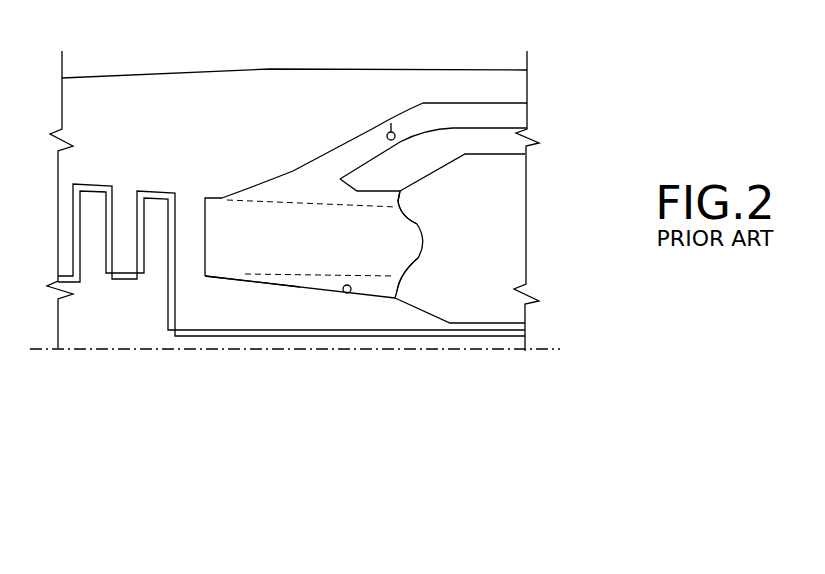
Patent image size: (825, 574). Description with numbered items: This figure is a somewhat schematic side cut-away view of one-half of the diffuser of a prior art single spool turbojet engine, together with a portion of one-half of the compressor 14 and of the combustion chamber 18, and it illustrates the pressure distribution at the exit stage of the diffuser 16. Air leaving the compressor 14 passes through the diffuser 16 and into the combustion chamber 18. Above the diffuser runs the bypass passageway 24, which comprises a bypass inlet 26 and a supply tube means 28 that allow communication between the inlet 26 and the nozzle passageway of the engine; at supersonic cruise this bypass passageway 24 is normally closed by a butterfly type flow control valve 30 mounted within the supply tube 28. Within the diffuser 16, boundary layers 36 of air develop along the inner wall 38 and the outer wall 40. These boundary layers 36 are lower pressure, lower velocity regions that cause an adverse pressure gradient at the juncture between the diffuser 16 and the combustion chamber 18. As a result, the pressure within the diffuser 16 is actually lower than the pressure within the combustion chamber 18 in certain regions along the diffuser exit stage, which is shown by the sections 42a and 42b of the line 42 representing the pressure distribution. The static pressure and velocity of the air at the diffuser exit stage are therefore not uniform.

The compressor 14 is at (118, 160).
The diffuser 16 is at (242, 268).
The combustion chamber 18 is at (510, 247).
The bypass passageway 24 is at (494, 82).
The bypass inlet 26 is at (271, 203).
The supply tube means 28 is at (455, 112).
The flow control valve 30 is at (370, 136).
The boundary layers 36 is at (380, 207).
The inner wall 38 is at (351, 292).
The outer wall 40 is at (373, 195).
The line 42 is at (417, 220).
The section of the line 42a is at (402, 205).
The section of the line 42b is at (400, 282).